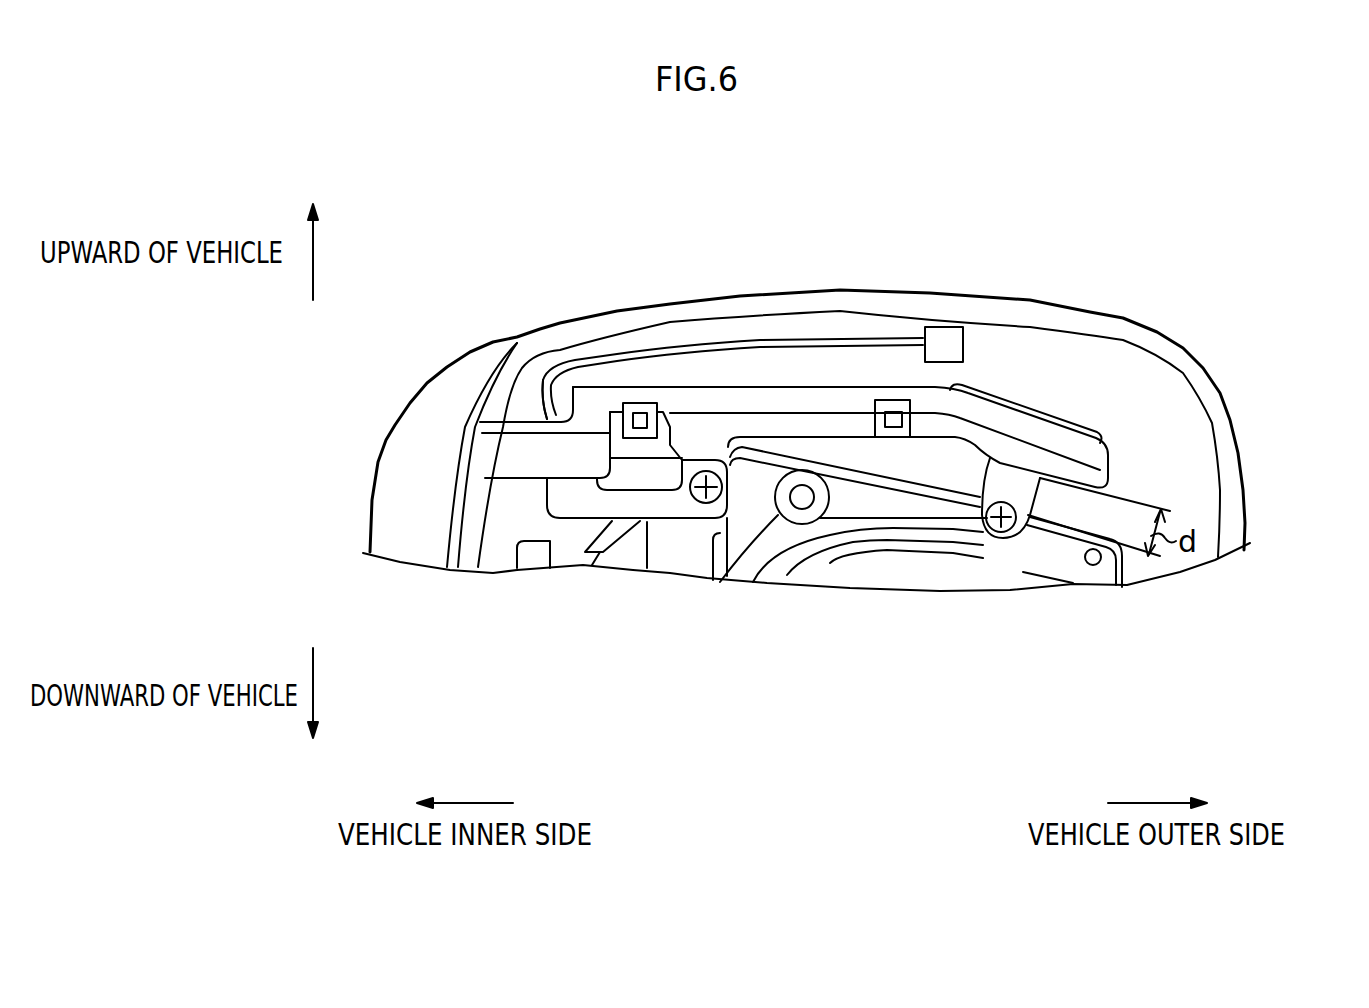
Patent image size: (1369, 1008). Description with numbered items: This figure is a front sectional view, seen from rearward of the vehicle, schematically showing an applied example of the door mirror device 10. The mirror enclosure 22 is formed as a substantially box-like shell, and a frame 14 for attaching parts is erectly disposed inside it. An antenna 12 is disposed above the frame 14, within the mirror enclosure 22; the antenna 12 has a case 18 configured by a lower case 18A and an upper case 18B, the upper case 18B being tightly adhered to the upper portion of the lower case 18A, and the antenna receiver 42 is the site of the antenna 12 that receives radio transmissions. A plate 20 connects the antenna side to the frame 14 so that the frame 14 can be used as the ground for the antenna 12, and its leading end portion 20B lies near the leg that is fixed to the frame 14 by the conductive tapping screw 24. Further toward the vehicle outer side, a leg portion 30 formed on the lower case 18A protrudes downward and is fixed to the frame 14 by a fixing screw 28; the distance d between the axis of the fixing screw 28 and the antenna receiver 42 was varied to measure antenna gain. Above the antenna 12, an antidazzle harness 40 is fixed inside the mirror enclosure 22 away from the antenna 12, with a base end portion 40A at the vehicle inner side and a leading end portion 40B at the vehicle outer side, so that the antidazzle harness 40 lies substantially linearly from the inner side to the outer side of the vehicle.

The door mirror device 10 is at (1304, 255).
The antenna 12 is at (752, 376).
The frame 14 is at (1074, 577).
The case 18 is at (426, 436).
The lower case 18A is at (518, 466).
The upper case 18B is at (515, 424).
The plate 20 is at (570, 506).
The leading end portion 20B is at (693, 466).
The mirror enclosure 22 is at (1146, 340).
The tapping screw 24 is at (700, 500).
The fixing screw 28 is at (997, 530).
The leg portion 30 is at (995, 482).
The antidazzle harness 40 is at (795, 332).
The base end portion 40A is at (543, 392).
The leading end portion 40B is at (906, 327).
The antenna receiver 42 is at (1030, 409).